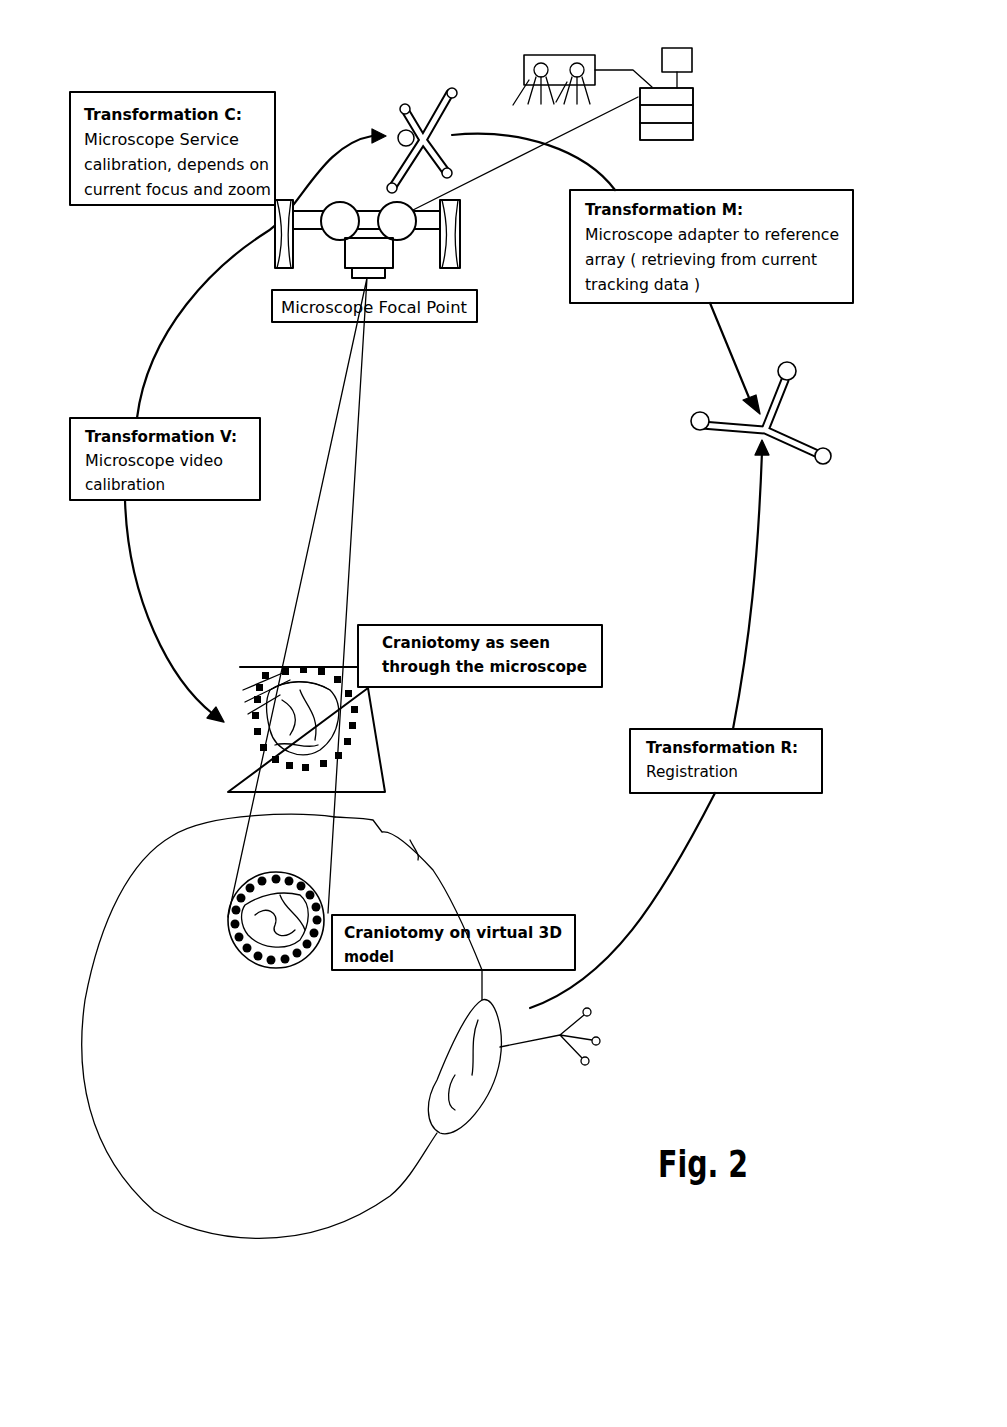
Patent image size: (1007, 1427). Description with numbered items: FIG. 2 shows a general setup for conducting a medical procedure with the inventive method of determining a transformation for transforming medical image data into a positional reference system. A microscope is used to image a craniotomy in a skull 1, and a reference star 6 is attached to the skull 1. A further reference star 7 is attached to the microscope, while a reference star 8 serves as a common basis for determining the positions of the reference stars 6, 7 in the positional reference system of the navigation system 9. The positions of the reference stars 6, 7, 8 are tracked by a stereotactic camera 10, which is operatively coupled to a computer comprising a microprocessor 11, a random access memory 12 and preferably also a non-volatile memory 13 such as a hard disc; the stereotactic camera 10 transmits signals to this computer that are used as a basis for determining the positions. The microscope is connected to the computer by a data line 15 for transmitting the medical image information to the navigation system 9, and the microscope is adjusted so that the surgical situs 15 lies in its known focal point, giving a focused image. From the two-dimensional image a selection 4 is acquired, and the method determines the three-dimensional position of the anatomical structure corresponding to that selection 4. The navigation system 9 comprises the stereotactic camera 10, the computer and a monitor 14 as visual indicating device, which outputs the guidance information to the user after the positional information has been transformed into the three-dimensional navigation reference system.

The skull 1 is at (390, 1196).
The selection 4 is at (290, 667).
The reference star 6 is at (590, 1030).
The reference star 7 is at (425, 108).
The reference star 8 is at (780, 427).
The navigation system 9 is at (742, 66).
The stereotactic camera 10 is at (567, 55).
The microprocessor 11 is at (695, 92).
The random access memory 12 is at (695, 115).
The non-volatile memory 13 is at (695, 135).
The monitor 14 is at (699, 50).
The data line 15 is at (490, 168).